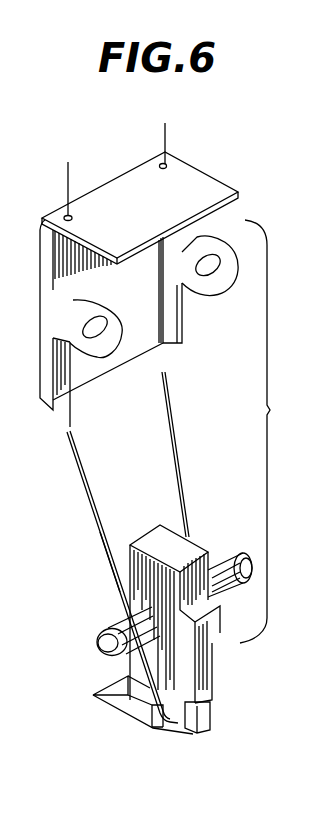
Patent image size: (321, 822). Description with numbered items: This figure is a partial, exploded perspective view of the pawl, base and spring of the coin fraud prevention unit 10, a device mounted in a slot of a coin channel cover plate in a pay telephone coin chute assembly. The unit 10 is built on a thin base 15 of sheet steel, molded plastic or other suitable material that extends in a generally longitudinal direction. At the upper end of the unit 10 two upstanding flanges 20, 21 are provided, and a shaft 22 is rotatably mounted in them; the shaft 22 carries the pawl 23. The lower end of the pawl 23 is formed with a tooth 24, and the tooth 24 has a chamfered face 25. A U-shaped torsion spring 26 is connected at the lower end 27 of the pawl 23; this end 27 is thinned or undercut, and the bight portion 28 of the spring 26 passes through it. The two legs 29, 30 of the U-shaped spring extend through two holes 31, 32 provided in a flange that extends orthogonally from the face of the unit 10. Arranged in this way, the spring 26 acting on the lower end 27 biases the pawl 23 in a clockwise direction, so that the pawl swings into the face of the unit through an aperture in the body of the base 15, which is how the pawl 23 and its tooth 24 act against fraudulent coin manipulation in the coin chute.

The coin fraud prevention unit 10 is at (268, 231).
The base 15 is at (128, 350).
The upstanding flange 20 is at (73, 300).
The upstanding flange 21 is at (195, 243).
The shaft 22 is at (253, 567).
The pawl 23 is at (203, 670).
The tooth 24 is at (120, 707).
The chamfered face 25 is at (112, 678).
The U-shaped torsion spring 26 is at (102, 557).
The lower end of the pawl 27 is at (203, 727).
The bight portion 28 is at (173, 724).
The leg of the spring 29 is at (88, 503).
The leg of the spring 30 is at (179, 450).
The hole 31 is at (66, 216).
The hole 32 is at (163, 163).